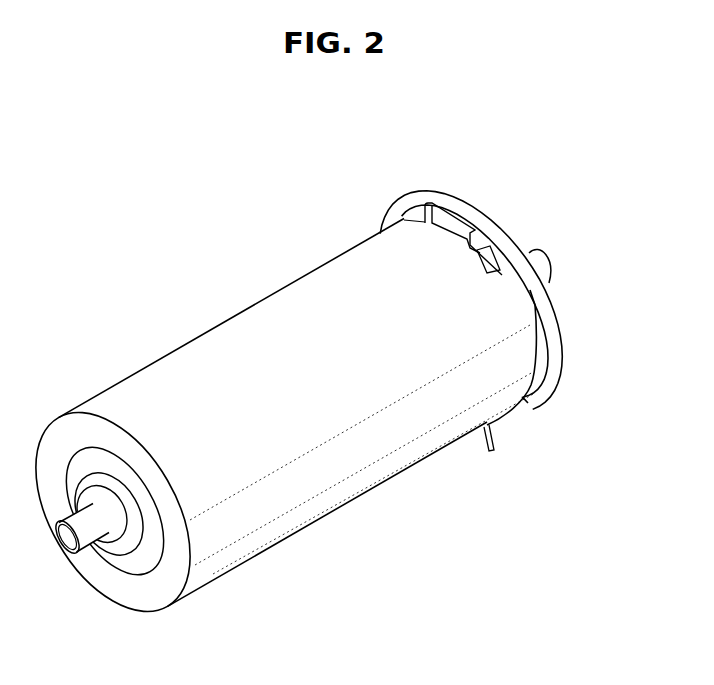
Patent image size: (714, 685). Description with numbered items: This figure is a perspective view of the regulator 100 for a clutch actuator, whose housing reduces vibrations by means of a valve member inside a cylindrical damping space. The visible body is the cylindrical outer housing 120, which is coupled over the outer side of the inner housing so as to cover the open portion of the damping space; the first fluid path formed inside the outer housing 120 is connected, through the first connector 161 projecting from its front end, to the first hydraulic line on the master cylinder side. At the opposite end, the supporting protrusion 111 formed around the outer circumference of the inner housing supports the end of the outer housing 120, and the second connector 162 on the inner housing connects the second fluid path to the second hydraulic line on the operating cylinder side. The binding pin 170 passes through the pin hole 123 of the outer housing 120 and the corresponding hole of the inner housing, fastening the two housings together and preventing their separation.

The regulator 100 is at (351, 163).
The outer housing 120 is at (258, 318).
The supporting protrusion 111 is at (553, 335).
The binding pin 170 is at (452, 211).
The pin hole 123 is at (495, 249).
The second connector 162 is at (548, 268).
The first connector 161 is at (113, 538).